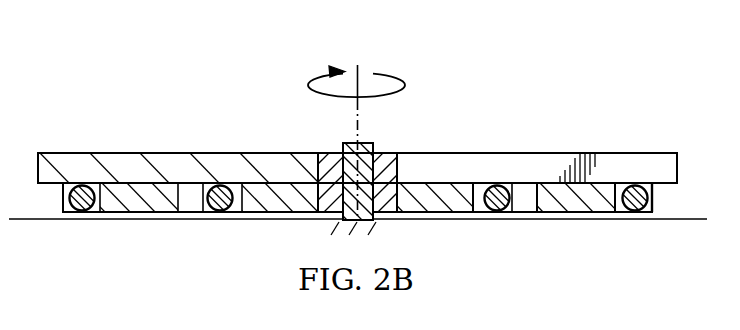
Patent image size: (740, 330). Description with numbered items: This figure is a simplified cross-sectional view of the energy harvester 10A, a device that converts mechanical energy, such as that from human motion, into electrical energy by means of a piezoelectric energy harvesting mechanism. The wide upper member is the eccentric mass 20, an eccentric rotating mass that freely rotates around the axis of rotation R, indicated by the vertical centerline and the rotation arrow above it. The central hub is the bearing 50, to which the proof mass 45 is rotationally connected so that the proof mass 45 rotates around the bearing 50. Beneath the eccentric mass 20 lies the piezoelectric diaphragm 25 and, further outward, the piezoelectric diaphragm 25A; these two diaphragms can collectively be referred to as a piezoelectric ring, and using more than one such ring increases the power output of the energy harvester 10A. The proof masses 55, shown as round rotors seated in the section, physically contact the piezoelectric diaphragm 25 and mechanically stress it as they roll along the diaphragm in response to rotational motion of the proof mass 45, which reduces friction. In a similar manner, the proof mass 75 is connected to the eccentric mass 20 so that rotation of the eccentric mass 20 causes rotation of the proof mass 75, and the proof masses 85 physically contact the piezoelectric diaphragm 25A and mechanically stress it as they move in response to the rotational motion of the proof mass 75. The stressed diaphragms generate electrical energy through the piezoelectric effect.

The energy harvester 10A is at (243, 96).
The eccentric mass 20 is at (535, 162).
The bearing 50 is at (383, 160).
The piezoelectric diaphragm 25 is at (518, 199).
The piezoelectric diaphragm 25A is at (653, 195).
The proof mass 45 is at (437, 207).
The proof masses 55 is at (488, 208).
The proof mass 75 is at (577, 208).
The proof masses 85 is at (625, 208).